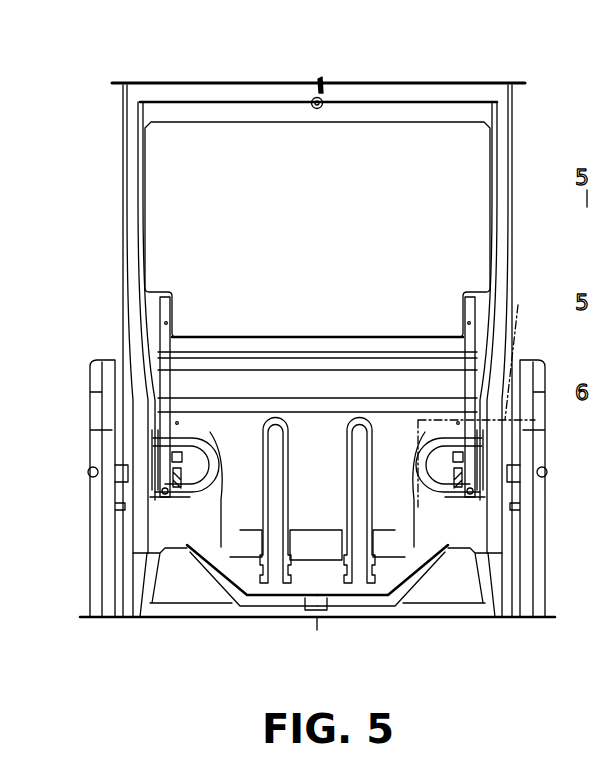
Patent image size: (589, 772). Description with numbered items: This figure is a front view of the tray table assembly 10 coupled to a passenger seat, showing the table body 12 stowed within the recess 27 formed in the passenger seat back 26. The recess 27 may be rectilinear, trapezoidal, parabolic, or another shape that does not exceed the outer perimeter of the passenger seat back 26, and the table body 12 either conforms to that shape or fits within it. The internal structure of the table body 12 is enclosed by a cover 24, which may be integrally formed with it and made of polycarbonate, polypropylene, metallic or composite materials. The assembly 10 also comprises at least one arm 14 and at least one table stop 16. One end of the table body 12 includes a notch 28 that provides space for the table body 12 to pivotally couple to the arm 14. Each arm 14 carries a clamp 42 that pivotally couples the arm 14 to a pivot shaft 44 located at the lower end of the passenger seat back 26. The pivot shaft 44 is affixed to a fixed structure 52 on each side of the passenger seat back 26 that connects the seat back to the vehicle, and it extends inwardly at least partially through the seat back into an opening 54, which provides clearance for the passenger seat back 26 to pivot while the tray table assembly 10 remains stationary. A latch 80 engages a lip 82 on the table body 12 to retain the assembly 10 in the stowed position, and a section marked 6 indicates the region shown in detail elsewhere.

The tray table assembly 10 is at (108, 172).
The table body 12 is at (197, 143).
The arm 14 is at (178, 357).
The table stop 16 is at (188, 545).
The cover 24 is at (383, 150).
The passenger seat back 26 is at (507, 110).
The recess 27 is at (147, 100).
The notch 28 is at (163, 302).
The clamp 42 is at (165, 479).
The pivot shaft 44 is at (123, 473).
The fixed structure 52 is at (108, 378).
The opening 54 is at (215, 445).
The latch 80 is at (312, 100).
The lip 82 is at (336, 112).
The section line for FIG. 6 is at (476, 393).